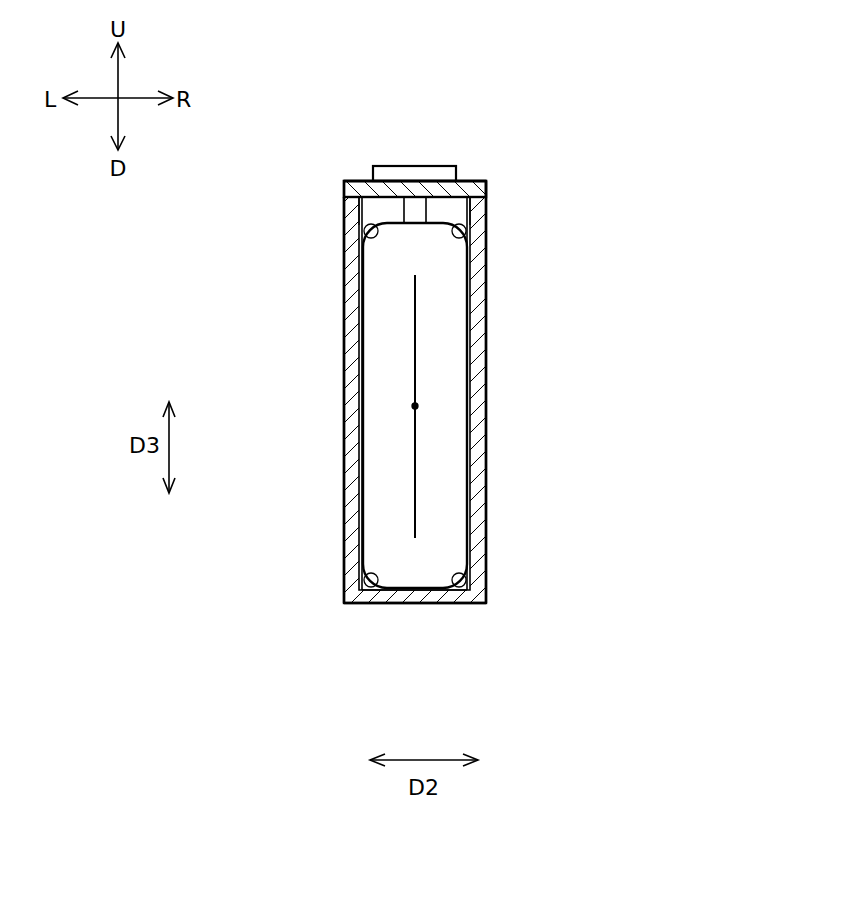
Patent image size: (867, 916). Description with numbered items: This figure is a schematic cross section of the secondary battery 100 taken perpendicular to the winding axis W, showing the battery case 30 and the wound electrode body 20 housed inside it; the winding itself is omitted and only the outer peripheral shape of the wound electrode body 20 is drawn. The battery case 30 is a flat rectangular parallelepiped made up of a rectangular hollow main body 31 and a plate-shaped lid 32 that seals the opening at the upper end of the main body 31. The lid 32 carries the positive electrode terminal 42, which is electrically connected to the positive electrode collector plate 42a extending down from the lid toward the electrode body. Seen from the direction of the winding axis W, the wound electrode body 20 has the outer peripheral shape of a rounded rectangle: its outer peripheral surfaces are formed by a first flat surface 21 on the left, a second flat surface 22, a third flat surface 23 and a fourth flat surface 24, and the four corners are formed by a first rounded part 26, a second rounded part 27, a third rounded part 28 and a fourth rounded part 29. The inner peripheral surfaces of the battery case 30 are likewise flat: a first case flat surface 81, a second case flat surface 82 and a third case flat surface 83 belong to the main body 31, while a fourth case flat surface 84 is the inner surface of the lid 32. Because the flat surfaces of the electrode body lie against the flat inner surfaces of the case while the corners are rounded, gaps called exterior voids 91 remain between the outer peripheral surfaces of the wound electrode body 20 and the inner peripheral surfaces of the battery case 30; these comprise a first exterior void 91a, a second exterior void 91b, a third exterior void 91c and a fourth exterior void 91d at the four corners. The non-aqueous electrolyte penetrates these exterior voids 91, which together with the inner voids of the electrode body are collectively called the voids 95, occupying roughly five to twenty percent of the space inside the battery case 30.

The secondary battery 100 is at (523, 92).
The wound electrode body 20 is at (350, 343).
The first flat surface 21 is at (357, 398).
The second flat surface 22 is at (468, 408).
The third flat surface 23 is at (423, 592).
The fourth flat surface 24 is at (486, 198).
The first rounded part 26 is at (352, 604).
The second rounded part 27 is at (358, 221).
The third rounded part 28 is at (461, 604).
The fourth rounded part 29 is at (443, 212).
The battery case 30 is at (498, 315).
The main body 31 is at (483, 467).
The lid 32 is at (362, 180).
The positive electrode terminal 42 is at (405, 165).
The positive electrode collector plate 42a is at (427, 208).
The first case flat surface 81 is at (362, 257).
The second case flat surface 82 is at (466, 563).
The third case flat surface 83 is at (385, 592).
The fourth case flat surface 84 is at (360, 207).
The exterior voids 91 is at (424, 415).
The first exterior void 91a is at (365, 581).
The second exterior void 91b is at (364, 234).
The third exterior void 91c is at (466, 583).
The fourth exterior void 91d is at (466, 237).
The voids 95 is at (424, 415).
The winding axis W is at (416, 404).